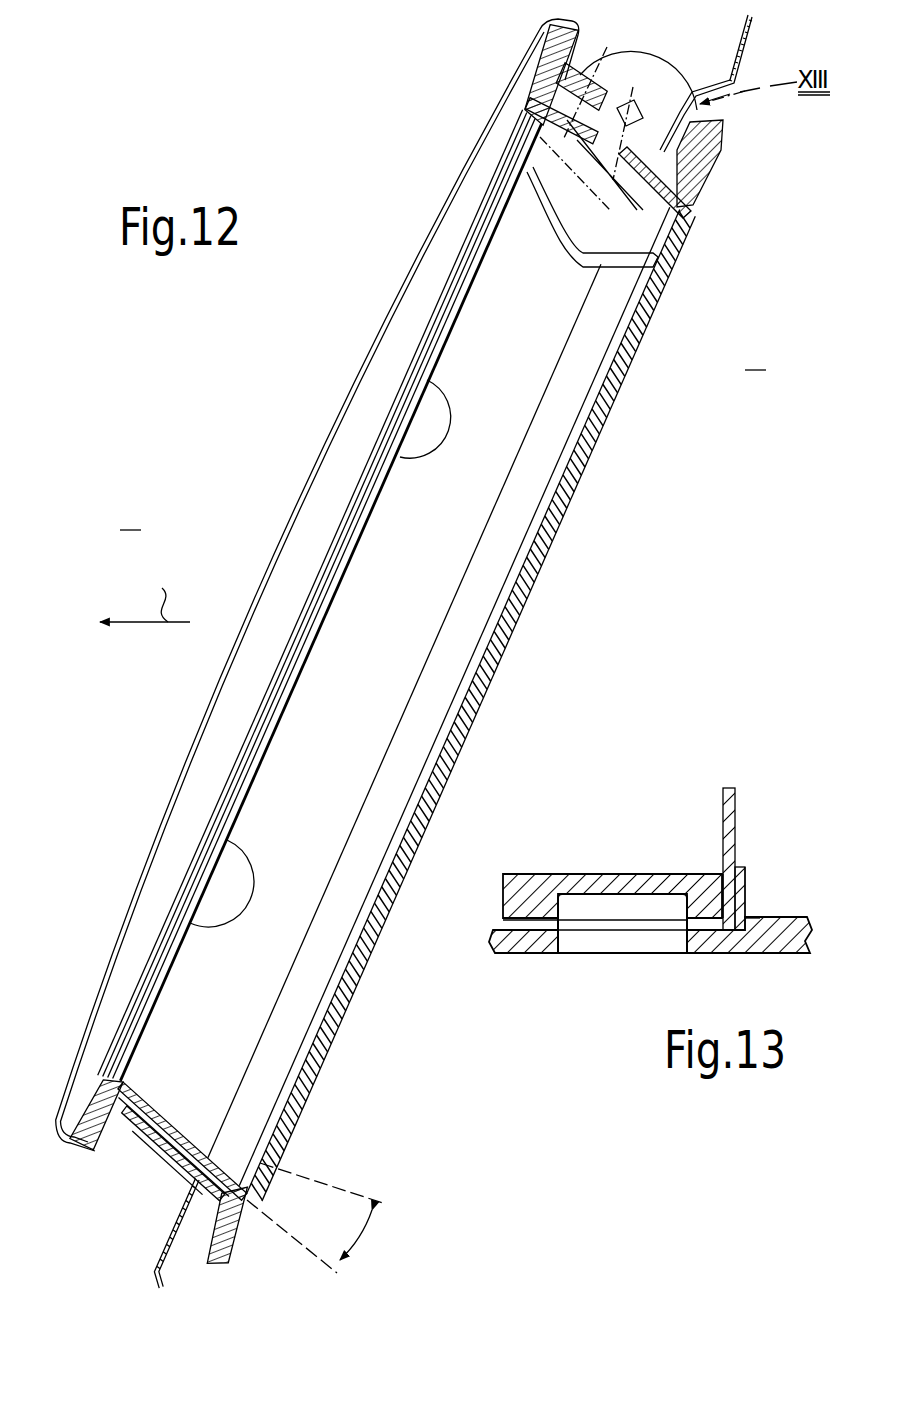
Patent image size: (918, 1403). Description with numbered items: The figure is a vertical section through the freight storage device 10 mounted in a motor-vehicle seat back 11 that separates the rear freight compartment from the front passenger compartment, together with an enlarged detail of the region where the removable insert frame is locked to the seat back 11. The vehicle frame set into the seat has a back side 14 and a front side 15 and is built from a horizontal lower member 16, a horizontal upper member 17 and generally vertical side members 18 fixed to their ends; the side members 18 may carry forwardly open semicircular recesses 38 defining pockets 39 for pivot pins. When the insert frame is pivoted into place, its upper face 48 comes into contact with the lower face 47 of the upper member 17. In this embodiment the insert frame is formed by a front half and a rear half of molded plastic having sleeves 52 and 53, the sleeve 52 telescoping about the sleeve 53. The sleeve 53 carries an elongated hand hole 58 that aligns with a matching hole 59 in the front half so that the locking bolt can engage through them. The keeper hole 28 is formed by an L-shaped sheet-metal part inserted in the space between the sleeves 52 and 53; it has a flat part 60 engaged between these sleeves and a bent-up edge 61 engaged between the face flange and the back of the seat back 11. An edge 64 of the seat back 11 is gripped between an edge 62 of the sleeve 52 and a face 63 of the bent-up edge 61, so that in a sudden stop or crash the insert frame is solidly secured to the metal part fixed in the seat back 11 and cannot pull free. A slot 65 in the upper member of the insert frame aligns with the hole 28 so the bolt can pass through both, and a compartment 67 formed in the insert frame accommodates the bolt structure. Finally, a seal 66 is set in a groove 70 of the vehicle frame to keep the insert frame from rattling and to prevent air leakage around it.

In FIG. 12, the freight storage device 10 is at (372, 248).
In FIG. 12, the seat back 11 is at (748, 56).
In FIG. 13, the seat back 11 is at (718, 790).
In FIG. 12, the back side 14 is at (227, 1225).
In FIG. 12, the front side 15 is at (322, 584).
In FIG. 12, the lower member 16 is at (181, 1141).
In FIG. 12, the upper member 17 is at (728, 153).
In FIG. 12, the side members 18 is at (321, 597).
In FIG. 13, the hole 28 is at (658, 932).
In FIG. 12, the semicircular recesses 38 is at (222, 860).
In FIG. 12, the pockets 39 is at (242, 900).
In FIG. 12, the lower face 47 is at (598, 272).
In FIG. 12, the upper face 48 is at (692, 187).
In FIG. 12, the sleeve 52 is at (561, 121).
In FIG. 13, the sleeve 52 is at (546, 874).
In FIG. 12, the sleeve 53 is at (610, 192).
In FIG. 13, the hand hole 58 is at (596, 952).
In FIG. 13, the hole 59 is at (618, 893).
In FIG. 12, the flat part 60 is at (660, 88).
In FIG. 13, the flat part 60 is at (535, 952).
In FIG. 13, the bent-up edge 61 is at (755, 868).
In FIG. 13, the edge 62 is at (742, 915).
In FIG. 13, the face 63 is at (720, 874).
In FIG. 13, the edge 64 is at (741, 866).
In FIG. 12, the slot 65 is at (602, 152).
In FIG. 12, the seal 66 is at (582, 87).
In FIG. 12, the compartment 67 is at (436, 688).
In FIG. 12, the groove 70 is at (173, 1154).